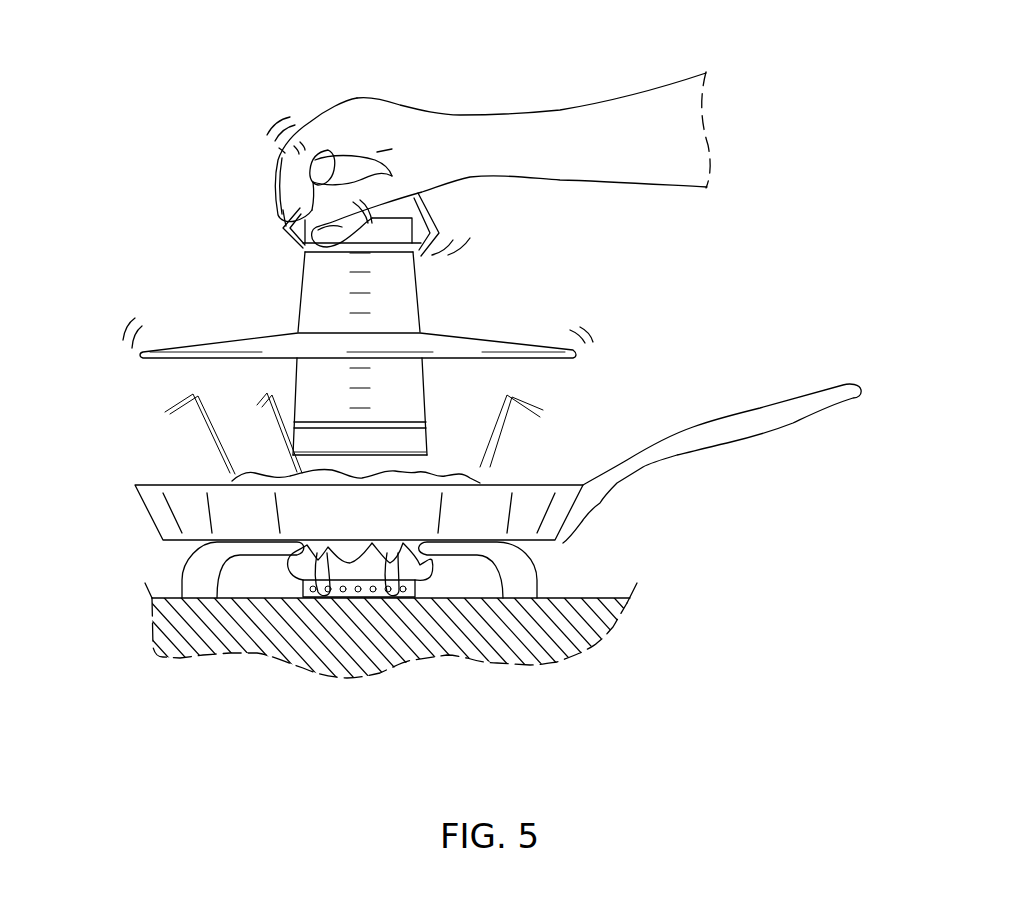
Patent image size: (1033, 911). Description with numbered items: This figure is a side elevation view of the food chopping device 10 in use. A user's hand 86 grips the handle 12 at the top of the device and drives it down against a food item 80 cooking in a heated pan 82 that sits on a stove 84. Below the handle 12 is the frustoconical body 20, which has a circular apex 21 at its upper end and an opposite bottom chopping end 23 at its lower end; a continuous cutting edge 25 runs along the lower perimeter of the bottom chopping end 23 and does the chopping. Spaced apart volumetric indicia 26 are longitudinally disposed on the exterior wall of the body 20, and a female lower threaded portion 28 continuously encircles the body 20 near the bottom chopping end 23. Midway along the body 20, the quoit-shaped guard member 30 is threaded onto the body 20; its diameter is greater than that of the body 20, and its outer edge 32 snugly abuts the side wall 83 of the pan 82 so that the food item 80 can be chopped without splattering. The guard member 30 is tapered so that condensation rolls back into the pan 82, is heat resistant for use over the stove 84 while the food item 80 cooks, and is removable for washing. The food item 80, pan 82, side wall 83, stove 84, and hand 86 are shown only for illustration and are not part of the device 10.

The food chopping device 10 is at (190, 240).
The handle 12 is at (324, 169).
The frustoconical body 20 is at (423, 305).
The circular apex 21 is at (283, 210).
The bottom chopping end 23 is at (303, 440).
The cutting edge 25 is at (427, 456).
The volumetric indicia 26 is at (363, 312).
The lower threaded portion 28 is at (423, 427).
The guard member 30 is at (508, 337).
The outer edge 32 is at (578, 357).
The food item 80 is at (248, 477).
The pan 82 is at (564, 543).
The side wall 83 is at (162, 513).
The stove 84 is at (567, 605).
The hand 86 is at (365, 105).